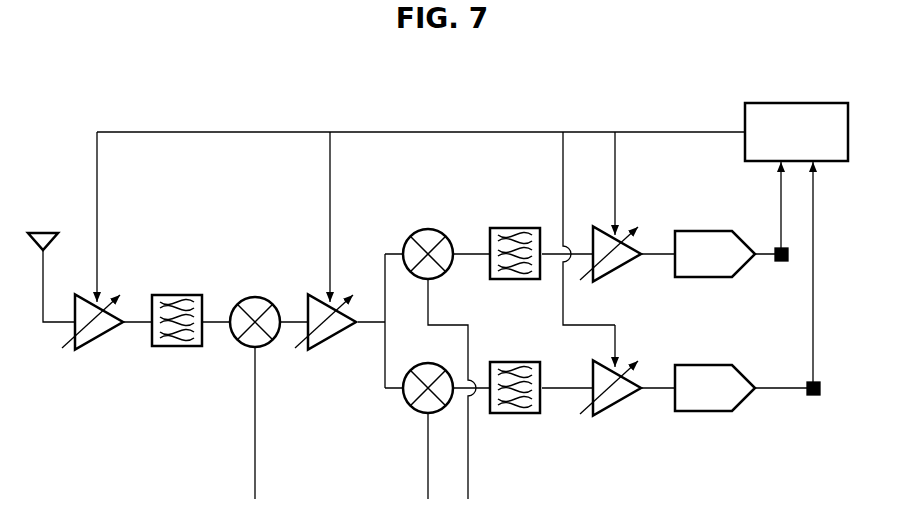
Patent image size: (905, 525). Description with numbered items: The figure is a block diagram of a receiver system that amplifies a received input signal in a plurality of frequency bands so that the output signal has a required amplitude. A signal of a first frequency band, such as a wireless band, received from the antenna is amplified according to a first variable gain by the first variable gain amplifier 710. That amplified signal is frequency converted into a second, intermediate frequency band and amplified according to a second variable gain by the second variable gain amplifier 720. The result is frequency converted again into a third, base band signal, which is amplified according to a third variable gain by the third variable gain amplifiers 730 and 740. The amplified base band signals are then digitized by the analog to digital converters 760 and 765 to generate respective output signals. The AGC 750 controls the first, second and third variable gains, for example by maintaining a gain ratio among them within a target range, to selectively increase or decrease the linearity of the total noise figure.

The first variable gain amplifier 710 is at (103, 335).
The second variable gain amplifier 720 is at (336, 335).
The third variable gain amplifier 730 is at (622, 272).
The third variable gain amplifier 740 is at (622, 407).
The AGC 750 is at (788, 102).
The analog to digital converter 760 is at (747, 267).
The analog to digital converter 765 is at (747, 402).